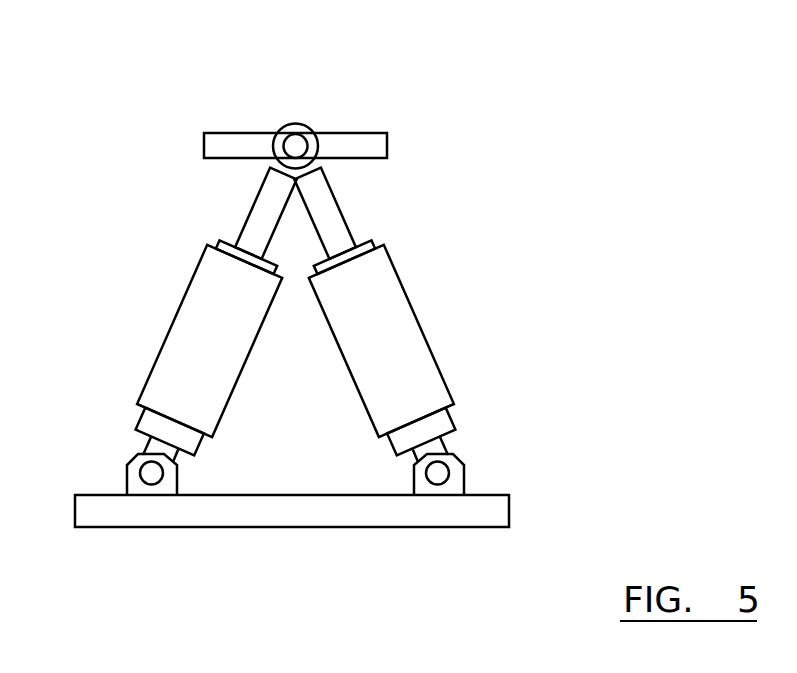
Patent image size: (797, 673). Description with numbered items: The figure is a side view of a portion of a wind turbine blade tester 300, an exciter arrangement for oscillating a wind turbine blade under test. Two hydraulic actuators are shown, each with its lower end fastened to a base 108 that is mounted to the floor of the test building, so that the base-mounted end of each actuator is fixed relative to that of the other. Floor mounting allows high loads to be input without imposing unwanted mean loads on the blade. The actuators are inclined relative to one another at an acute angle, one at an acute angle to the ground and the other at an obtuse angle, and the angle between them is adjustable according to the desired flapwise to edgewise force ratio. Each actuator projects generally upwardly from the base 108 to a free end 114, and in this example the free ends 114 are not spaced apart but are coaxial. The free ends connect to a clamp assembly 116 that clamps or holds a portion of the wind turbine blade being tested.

The base 108 is at (278, 512).
The free end 114 is at (297, 143).
The clamp assembly 116 is at (213, 146).
The wind turbine blade tester 300 is at (413, 117).